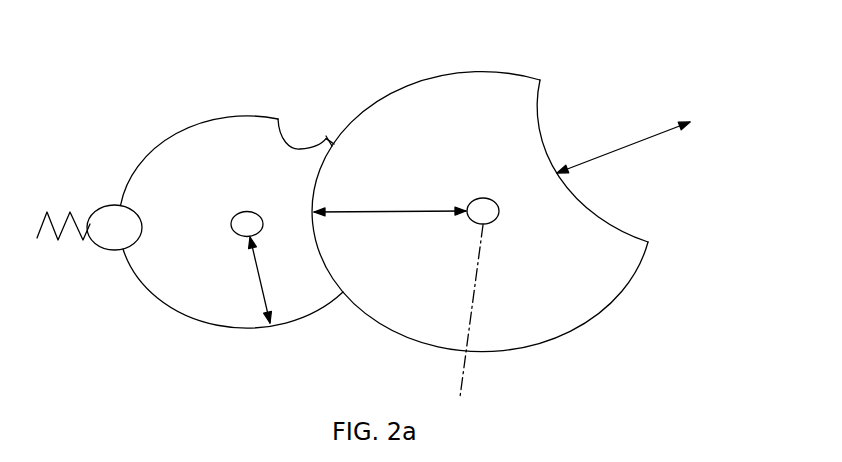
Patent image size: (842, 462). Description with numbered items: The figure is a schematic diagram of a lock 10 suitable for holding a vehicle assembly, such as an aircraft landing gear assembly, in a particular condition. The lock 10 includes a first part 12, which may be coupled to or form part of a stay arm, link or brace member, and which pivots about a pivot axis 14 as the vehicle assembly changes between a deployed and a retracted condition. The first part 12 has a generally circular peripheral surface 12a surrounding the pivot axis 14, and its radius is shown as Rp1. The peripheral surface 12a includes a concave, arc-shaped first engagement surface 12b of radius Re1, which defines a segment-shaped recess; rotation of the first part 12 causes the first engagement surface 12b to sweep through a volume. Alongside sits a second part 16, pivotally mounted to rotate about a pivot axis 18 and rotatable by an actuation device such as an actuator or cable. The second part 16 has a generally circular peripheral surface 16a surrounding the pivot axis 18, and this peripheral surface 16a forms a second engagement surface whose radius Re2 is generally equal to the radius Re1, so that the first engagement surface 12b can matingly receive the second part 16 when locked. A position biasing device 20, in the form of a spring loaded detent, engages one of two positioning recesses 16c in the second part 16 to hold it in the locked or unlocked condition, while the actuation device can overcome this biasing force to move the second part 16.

The lock 10 is at (634, 72).
The first part 12 is at (491, 212).
The peripheral surface 12a is at (421, 80).
The first engagement surface 12b is at (617, 222).
The pivot axis 14 is at (492, 222).
The second part 16 is at (209, 228).
The peripheral surface 16a is at (151, 300).
The positioning recess 16c is at (298, 146).
The pivot axis 18 is at (246, 210).
The position biasing device 20 is at (92, 216).
The radius of the peripheral surface Rp1 is at (390, 196).
The radius of the first engagement surface Re1 is at (623, 147).
The radius of the second engagement surface Re2 is at (280, 280).